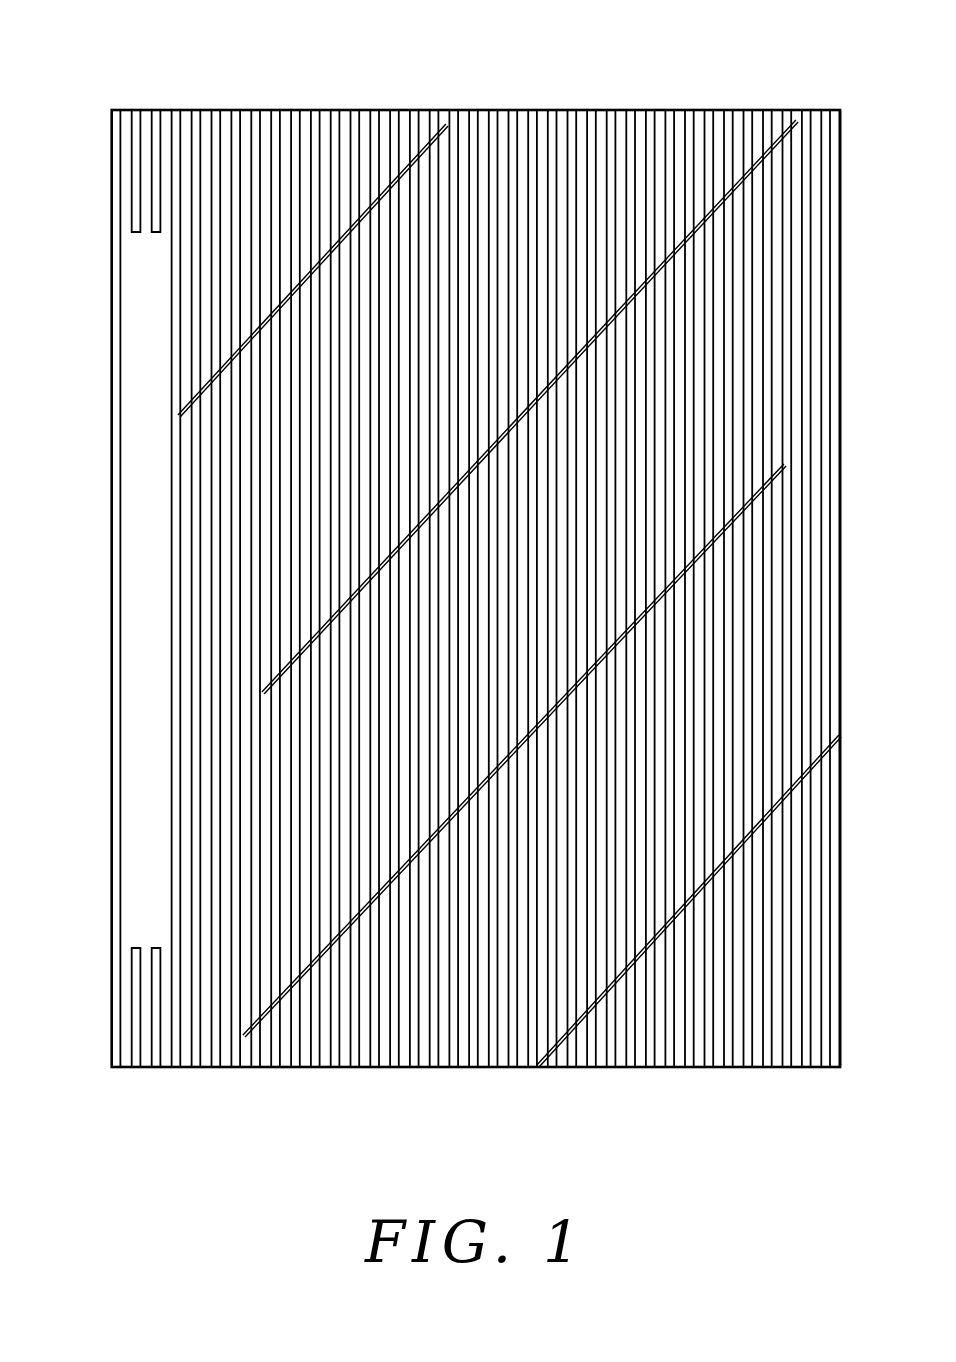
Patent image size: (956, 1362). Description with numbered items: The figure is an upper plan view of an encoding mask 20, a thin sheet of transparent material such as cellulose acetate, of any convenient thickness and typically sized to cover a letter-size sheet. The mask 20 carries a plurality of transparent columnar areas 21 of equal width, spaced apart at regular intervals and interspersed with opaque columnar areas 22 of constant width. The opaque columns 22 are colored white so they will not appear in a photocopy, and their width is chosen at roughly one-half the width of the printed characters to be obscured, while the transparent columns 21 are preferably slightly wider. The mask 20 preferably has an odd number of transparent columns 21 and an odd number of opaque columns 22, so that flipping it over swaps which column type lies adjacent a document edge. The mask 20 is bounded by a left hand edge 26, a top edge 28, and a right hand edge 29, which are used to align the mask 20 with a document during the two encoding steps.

The encoding mask 20 is at (593, 100).
The transparent columnar areas 21 is at (205, 110).
The opaque columnar areas 22 is at (138, 110).
The left hand edge 26 is at (110, 490).
The top edge 28 is at (423, 108).
The right hand edge 29 is at (845, 510).